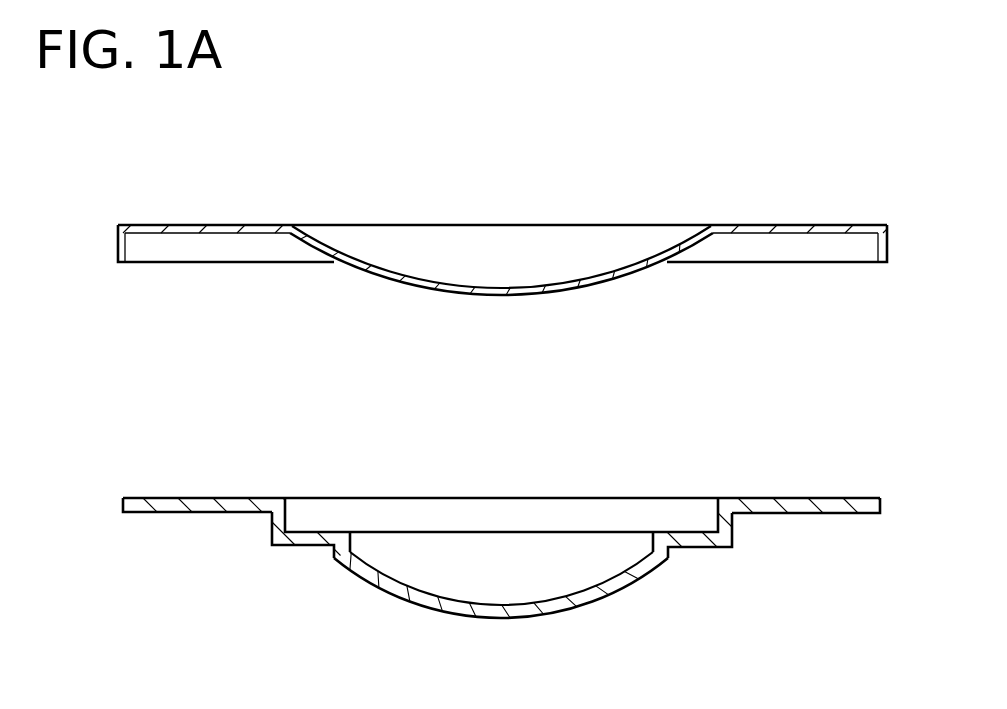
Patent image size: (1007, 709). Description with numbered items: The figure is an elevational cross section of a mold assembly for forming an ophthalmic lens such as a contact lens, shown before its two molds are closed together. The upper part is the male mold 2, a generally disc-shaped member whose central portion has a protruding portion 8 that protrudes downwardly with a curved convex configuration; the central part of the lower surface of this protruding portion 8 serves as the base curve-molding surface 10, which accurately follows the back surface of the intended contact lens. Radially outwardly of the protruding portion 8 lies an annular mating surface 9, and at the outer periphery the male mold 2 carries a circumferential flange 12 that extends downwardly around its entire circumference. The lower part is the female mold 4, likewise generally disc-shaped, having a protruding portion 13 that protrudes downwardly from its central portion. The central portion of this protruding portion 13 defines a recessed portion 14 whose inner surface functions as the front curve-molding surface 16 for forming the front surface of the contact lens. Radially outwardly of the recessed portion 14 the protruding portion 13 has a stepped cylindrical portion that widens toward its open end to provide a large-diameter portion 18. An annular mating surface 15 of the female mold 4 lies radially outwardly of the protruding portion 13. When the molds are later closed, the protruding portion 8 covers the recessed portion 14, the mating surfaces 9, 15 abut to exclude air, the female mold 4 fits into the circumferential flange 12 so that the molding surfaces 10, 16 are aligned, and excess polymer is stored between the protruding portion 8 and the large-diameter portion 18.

The male mold 2 is at (479, 240).
The annular mating surface 9 is at (208, 232).
The circumferential flange 12 is at (118, 252).
The protruding portion 8 is at (430, 287).
The molding surface 10 is at (560, 292).
The female mold 4 is at (504, 550).
The annular mating surface 15 is at (181, 493).
The protruding portion 13 is at (301, 567).
The recessed portion 14 is at (420, 594).
The molding surface 16 is at (511, 603).
The large-diameter portion 18 is at (730, 520).